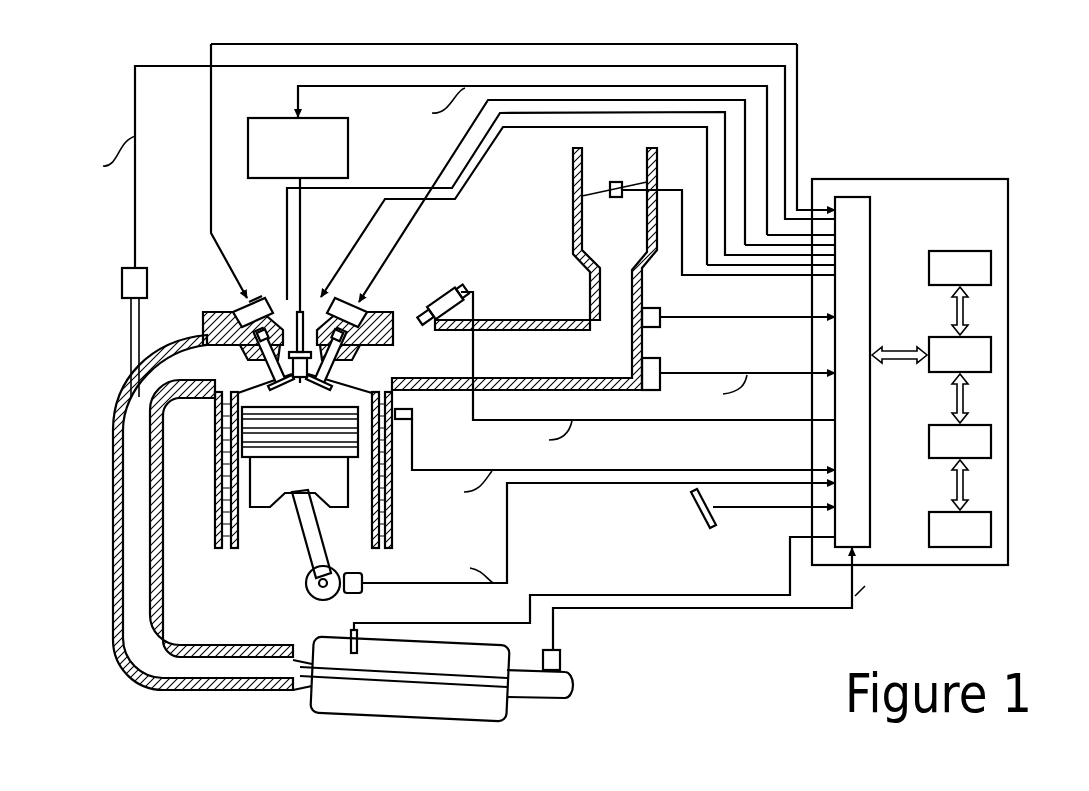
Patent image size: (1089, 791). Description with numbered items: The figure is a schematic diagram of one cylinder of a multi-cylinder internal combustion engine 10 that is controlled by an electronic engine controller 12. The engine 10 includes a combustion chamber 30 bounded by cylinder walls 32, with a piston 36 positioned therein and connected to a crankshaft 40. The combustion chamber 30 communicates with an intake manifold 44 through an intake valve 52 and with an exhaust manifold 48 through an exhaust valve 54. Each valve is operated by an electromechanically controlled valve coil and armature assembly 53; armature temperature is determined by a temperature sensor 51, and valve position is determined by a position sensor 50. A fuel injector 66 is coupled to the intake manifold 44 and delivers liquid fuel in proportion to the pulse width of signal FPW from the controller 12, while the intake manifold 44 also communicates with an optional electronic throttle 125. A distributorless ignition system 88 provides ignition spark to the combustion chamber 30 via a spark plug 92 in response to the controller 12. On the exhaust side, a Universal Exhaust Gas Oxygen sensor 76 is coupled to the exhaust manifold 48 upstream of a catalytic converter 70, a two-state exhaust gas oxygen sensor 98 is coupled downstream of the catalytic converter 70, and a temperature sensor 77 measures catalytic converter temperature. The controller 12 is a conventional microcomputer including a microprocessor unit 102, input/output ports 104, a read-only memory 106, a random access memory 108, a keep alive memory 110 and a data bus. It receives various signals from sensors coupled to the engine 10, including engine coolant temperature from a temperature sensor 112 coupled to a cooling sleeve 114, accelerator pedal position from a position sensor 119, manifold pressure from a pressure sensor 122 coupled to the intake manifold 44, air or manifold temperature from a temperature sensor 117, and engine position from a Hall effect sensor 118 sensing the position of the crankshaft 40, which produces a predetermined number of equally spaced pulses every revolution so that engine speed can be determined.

The internal combustion engine 10 is at (205, 302).
The electronic engine controller 12 is at (903, 179).
The combustion chamber 30 is at (300, 396).
The cylinder walls 32 is at (238, 538).
The piston 36 is at (293, 483).
The crankshaft 40 is at (306, 583).
The intake manifold 44 is at (583, 366).
The exhaust manifold 48 is at (130, 413).
The position sensor 50 is at (272, 300).
The temperature sensor 51 is at (326, 299).
The intake valve 52 is at (378, 361).
The valve coil and armature assembly 53 is at (247, 300).
The exhaust valve 54 is at (258, 372).
The fuel injector 66 is at (429, 297).
The catalytic converter 70 is at (370, 717).
The Universal Exhaust Gas Oxygen (UEGO) sensor 76 is at (124, 272).
The temperature sensor 77 is at (347, 640).
The distributorless ignition system 88 is at (348, 150).
The spark plug 92 is at (302, 300).
The two-state exhaust gas oxygen sensor 98 is at (565, 660).
The microprocessor unit 102 is at (931, 337).
The input/output ports 104 is at (871, 220).
The read-only memory 106 is at (960, 251).
The random access memory 108 is at (931, 425).
The keep alive memory 110 is at (931, 512).
The temperature sensor 112 is at (412, 405).
The cooling sleeve 114 is at (222, 549).
The temperature sensor 117 is at (661, 310).
The Hall effect sensor 118 is at (363, 590).
The position sensor 119 is at (688, 526).
The pressure sensor 122 is at (662, 363).
The electronic throttle 125 is at (604, 182).